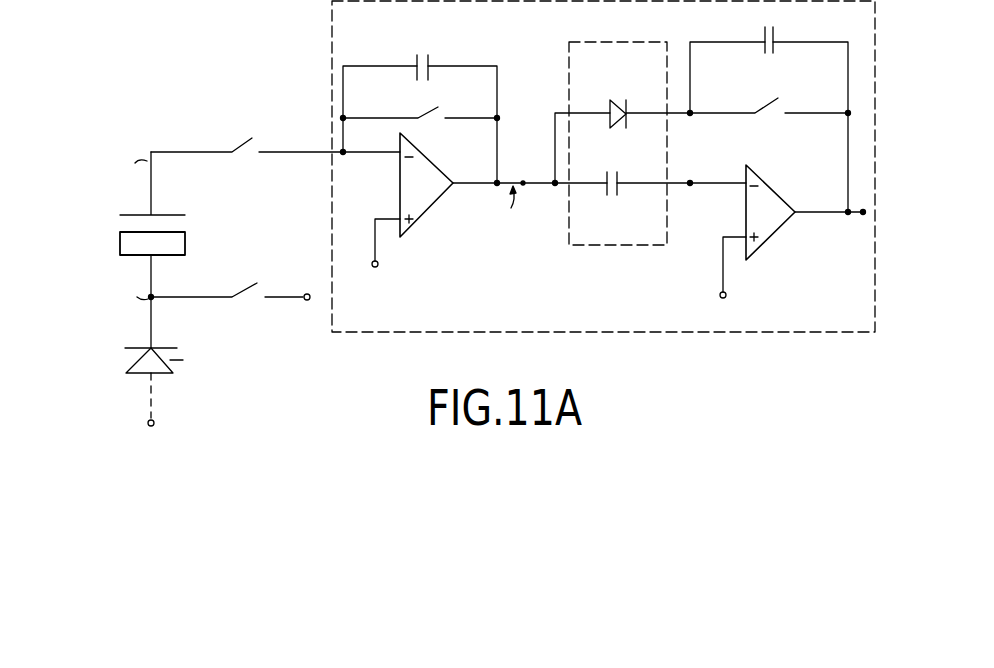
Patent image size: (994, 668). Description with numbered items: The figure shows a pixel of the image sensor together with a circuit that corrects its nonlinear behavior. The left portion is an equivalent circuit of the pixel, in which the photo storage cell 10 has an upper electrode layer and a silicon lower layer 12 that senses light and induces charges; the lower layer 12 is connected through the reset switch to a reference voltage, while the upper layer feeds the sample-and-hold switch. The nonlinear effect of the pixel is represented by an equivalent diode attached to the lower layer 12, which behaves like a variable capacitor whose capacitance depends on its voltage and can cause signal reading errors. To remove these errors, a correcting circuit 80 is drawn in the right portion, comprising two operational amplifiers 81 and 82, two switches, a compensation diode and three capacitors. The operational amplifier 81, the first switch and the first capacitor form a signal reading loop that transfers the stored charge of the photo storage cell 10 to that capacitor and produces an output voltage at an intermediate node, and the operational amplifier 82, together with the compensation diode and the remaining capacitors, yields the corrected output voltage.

The photo storage cell 10 is at (86, 206).
The lower layer 12 is at (185, 245).
The correcting circuit 80 is at (782, 323).
The operational amplifier 81 is at (432, 202).
The operational amplifier 82 is at (785, 218).